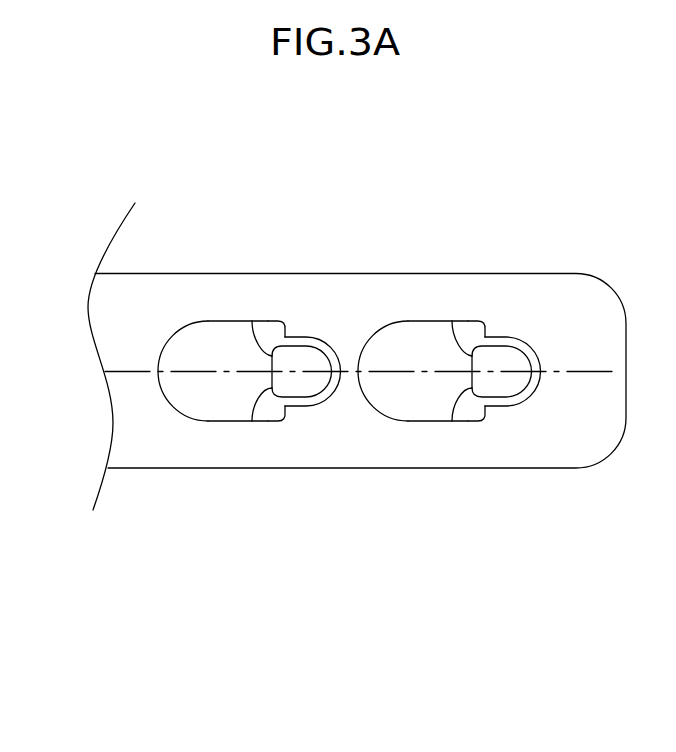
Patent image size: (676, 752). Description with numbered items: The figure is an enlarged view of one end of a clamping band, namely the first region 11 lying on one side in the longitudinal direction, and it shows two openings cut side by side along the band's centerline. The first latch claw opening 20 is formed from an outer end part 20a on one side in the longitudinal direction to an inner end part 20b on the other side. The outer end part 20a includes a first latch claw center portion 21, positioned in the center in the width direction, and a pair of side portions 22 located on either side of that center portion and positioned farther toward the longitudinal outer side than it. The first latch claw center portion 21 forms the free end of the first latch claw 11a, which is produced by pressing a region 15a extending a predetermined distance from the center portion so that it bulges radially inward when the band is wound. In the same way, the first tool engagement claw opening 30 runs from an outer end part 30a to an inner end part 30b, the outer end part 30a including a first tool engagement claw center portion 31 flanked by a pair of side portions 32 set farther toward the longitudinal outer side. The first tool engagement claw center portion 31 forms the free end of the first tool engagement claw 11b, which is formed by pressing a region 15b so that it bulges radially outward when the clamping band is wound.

The first region 11 is at (430, 221).
The first latch claw 11a is at (512, 332).
The first tool engagement claw 11b is at (292, 333).
The region 15a is at (514, 379).
The region 15b is at (316, 379).
The first latch claw opening 20 is at (415, 387).
The outer end part 20a is at (468, 390).
The inner end part 20b is at (366, 381).
The first latch claw center portion 21 is at (462, 350).
The side portions 22 is at (472, 320).
The first tool engagement claw opening 30 is at (215, 388).
The outer end part 30a is at (268, 390).
The inner end part 30b is at (166, 381).
The first tool engagement claw center portion 31 is at (262, 350).
The side portions 32 is at (270, 320).